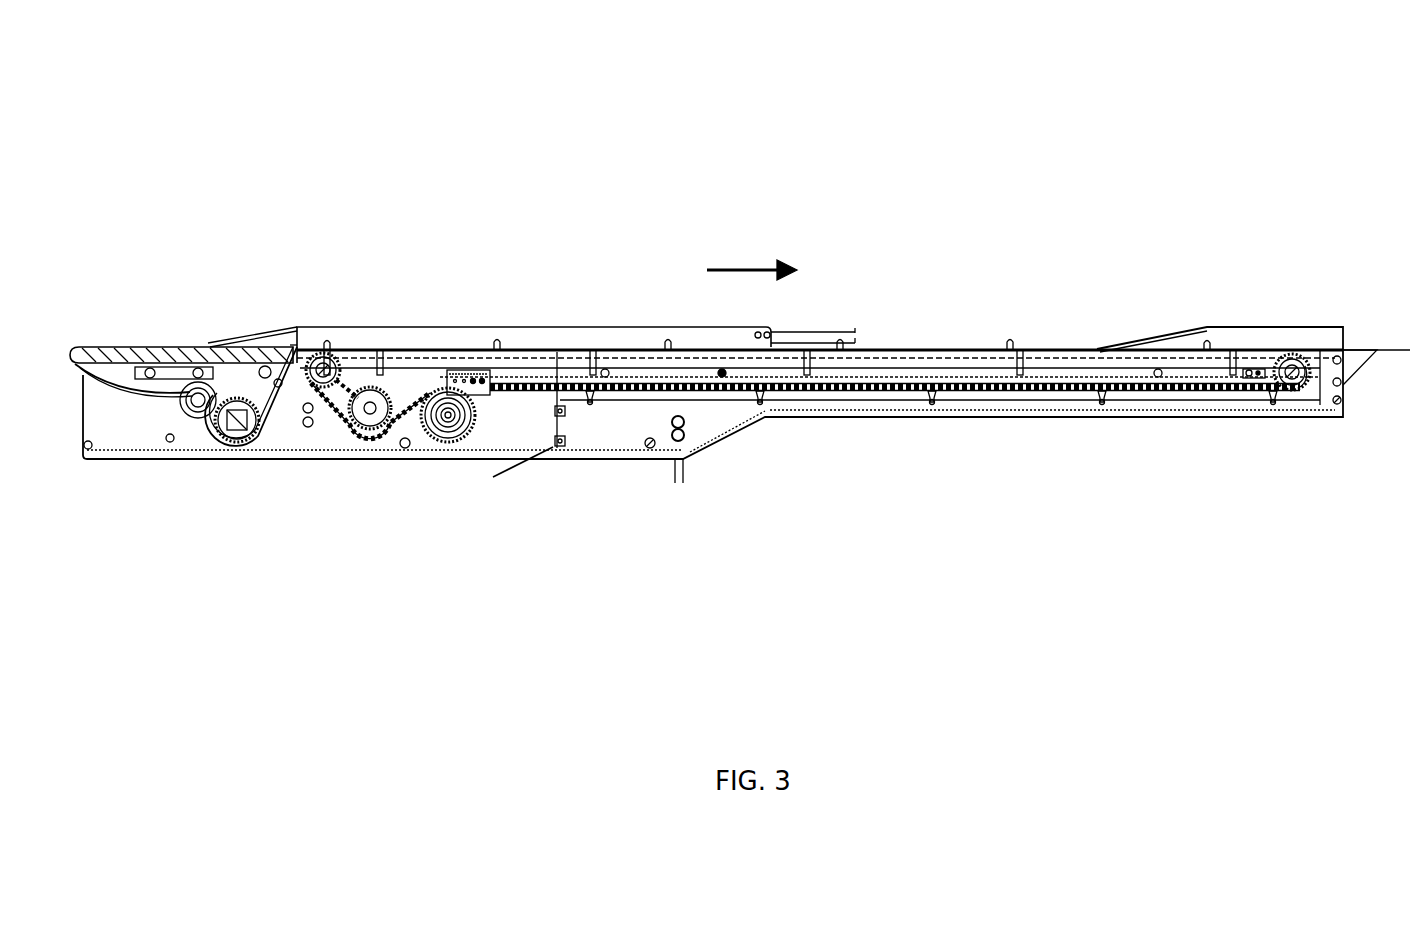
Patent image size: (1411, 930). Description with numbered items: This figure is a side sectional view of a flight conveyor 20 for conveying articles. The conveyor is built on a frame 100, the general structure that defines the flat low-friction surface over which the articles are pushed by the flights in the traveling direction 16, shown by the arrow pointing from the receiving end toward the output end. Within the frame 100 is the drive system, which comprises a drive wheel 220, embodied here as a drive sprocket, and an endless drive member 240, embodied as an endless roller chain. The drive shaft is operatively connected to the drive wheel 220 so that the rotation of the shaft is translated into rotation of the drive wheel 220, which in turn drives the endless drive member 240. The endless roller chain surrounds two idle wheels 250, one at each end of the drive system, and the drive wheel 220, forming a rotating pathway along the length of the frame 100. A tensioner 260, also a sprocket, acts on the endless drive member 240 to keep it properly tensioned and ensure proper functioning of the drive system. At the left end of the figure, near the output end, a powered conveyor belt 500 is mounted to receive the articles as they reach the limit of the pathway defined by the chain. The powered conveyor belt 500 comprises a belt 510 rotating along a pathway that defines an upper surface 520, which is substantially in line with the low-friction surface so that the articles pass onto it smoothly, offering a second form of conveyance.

The flight conveyor 20 is at (562, 162).
The traveling direction 16 is at (752, 254).
The frame 100 is at (618, 425).
The drive wheel 220 is at (370, 430).
The endless drive member 240 is at (333, 400).
The idle wheels 250 is at (330, 360).
The tensioner 260 is at (448, 446).
The powered conveyor belt 500 is at (117, 347).
The belt 510 is at (130, 458).
The upper surface 520 is at (175, 347).